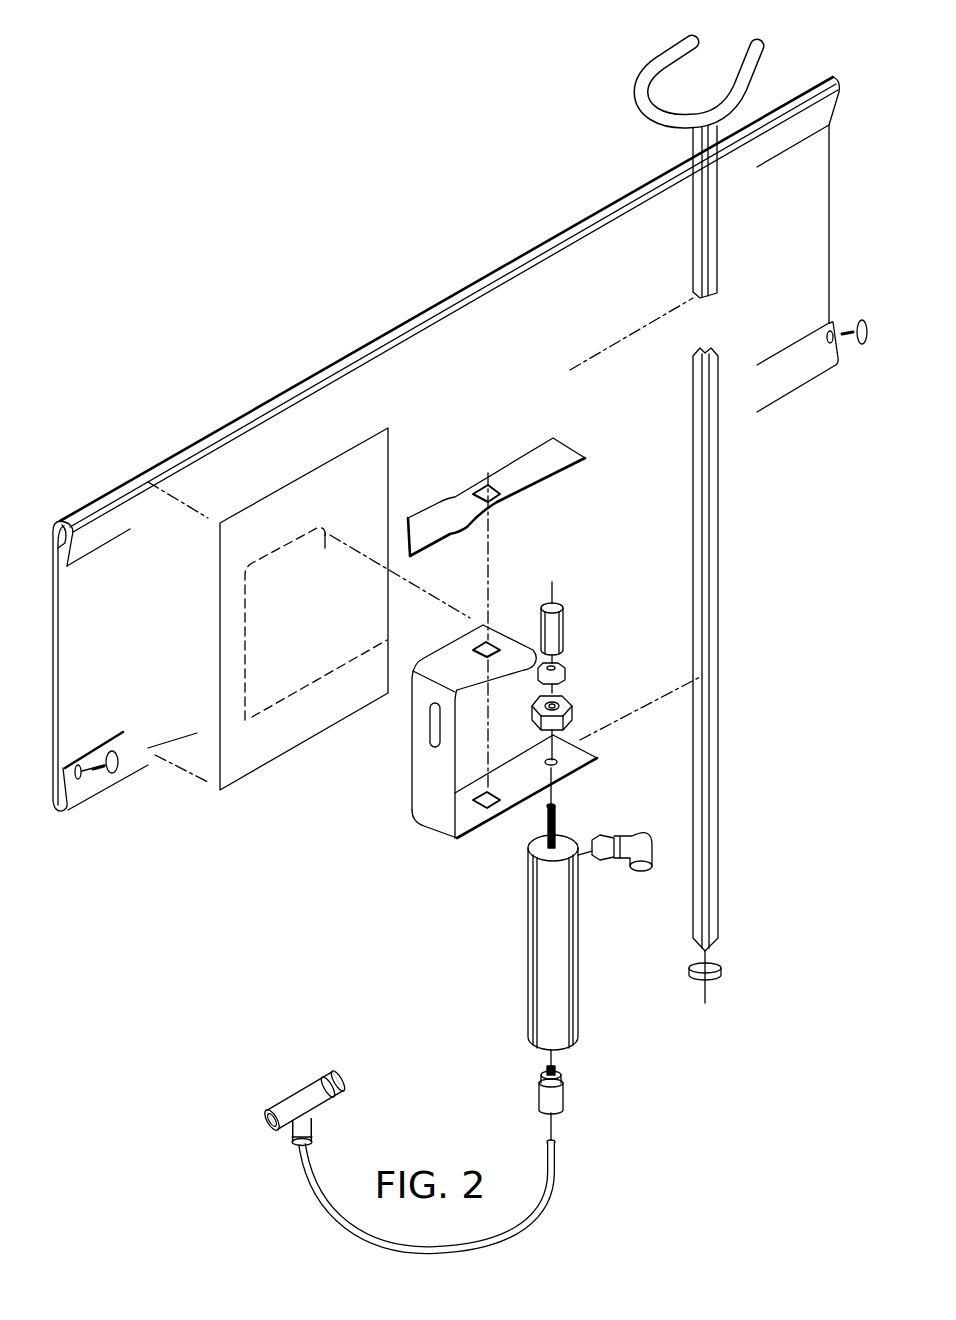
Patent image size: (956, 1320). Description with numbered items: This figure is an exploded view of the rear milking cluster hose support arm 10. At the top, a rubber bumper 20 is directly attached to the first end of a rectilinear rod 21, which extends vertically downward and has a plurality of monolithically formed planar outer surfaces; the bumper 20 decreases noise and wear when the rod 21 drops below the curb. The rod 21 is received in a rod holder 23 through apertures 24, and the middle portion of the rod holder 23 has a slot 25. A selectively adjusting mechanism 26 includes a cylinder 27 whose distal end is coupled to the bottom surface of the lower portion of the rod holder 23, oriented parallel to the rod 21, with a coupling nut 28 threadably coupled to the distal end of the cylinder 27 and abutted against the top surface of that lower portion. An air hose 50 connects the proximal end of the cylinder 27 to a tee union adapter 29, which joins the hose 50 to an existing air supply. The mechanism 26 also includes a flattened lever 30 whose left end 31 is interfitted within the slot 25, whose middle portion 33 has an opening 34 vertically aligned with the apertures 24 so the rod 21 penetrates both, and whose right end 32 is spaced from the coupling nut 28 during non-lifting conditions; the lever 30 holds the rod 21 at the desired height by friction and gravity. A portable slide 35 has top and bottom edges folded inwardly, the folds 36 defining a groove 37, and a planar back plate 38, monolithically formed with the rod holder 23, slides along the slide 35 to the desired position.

The rear milking cluster hose support arm 10 is at (222, 265).
The rubber bumper 20 is at (722, 120).
The rectilinear rod 21 is at (712, 452).
The rod holder 23 is at (433, 795).
The apertures 24 is at (492, 645).
The slot 25 is at (432, 738).
The selectively adjusting mechanism 26 is at (586, 660).
The cylinder 27 is at (555, 942).
The coupling nut 28 is at (572, 707).
The tee union adapter 29 is at (313, 1102).
The flattened lever 30 is at (514, 450).
The left end of the lever 31 is at (415, 520).
The right end of the lever 32 is at (557, 452).
The middle portion of the lever 33 is at (510, 488).
The opening 34 is at (482, 492).
The portable slide 35 is at (113, 683).
The folds 36 is at (60, 524).
The groove 37 is at (60, 543).
The planar back plate 38 is at (234, 755).
The air hose 50 is at (562, 1163).